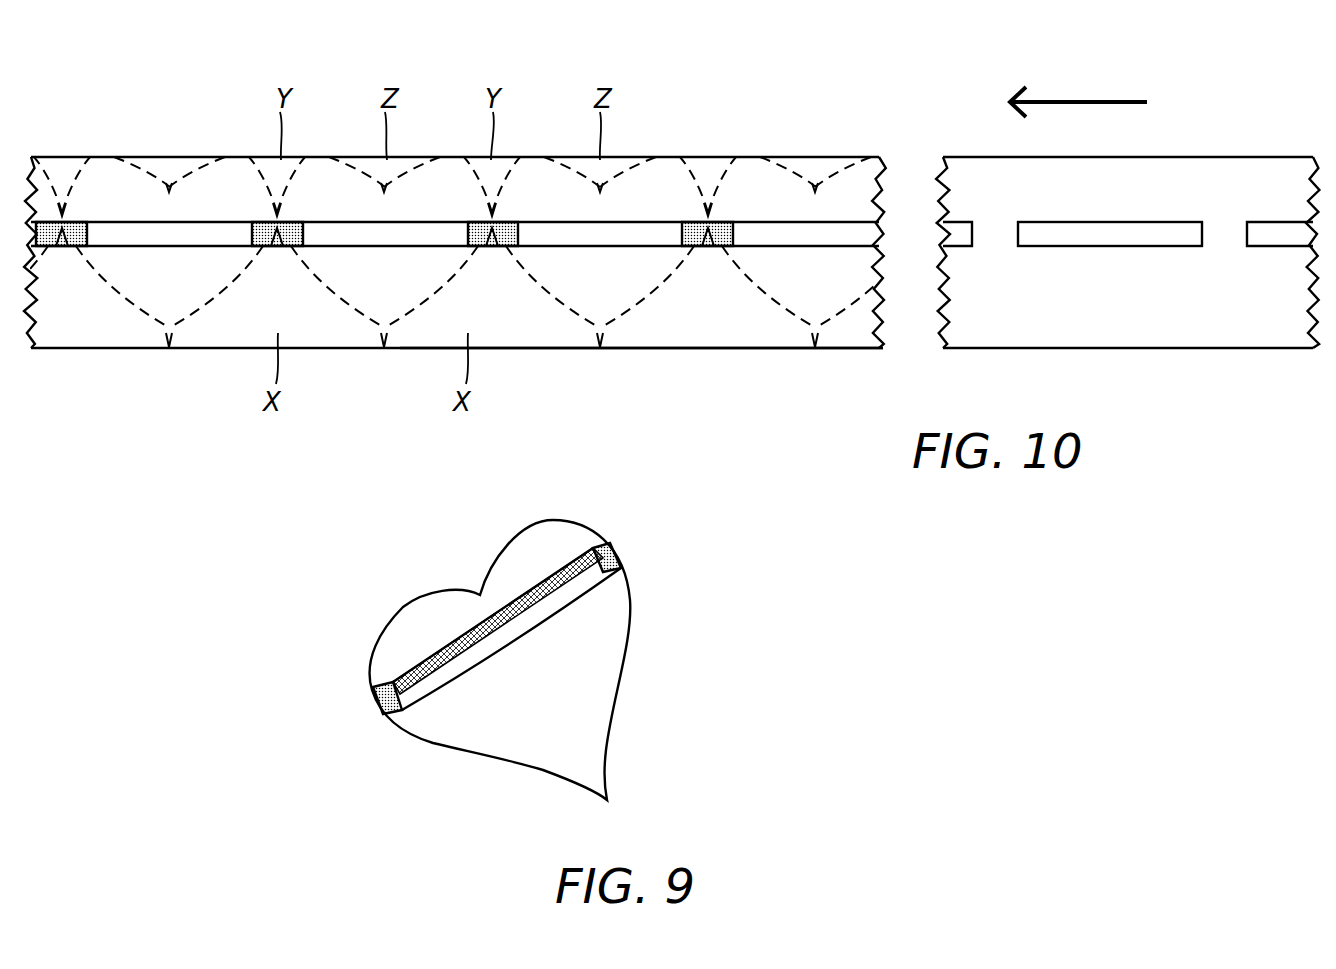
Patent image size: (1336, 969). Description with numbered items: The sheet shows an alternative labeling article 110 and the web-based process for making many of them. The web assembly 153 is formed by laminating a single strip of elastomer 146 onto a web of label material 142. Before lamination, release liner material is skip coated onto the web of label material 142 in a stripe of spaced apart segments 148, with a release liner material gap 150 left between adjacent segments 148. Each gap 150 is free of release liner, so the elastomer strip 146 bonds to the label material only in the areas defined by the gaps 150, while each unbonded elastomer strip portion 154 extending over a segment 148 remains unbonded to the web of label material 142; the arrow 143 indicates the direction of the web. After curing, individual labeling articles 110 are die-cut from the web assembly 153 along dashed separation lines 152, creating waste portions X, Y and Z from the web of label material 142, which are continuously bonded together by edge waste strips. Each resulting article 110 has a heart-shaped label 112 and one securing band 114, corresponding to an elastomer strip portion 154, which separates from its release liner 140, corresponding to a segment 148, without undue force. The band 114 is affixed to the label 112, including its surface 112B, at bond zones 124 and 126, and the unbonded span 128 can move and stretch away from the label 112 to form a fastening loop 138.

In FIG. 9, the labeling article 110 is at (658, 634).
In FIG. 9, the label 112 is at (506, 778).
In FIG. 9, the body layer surface 112B is at (593, 698).
In FIG. 9, the securing band 114 is at (451, 690).
In FIG. 9, the bond zone 124 is at (615, 552).
In FIG. 9, the bond zone 126 is at (385, 698).
In FIG. 9, the span 128 is at (517, 637).
In FIG. 9, the fastening loop 138 is at (424, 646).
In FIG. 9, the release liner 140 is at (542, 588).
In FIG. 10, the web of label material 142 is at (843, 335).
In FIG. 10, the machine direction arrow 143 is at (1087, 102).
In FIG. 10, the strip of elastomer 146 is at (765, 237).
In FIG. 10, the release liner segment 148 is at (961, 222).
In FIG. 10, the release liner material gap 150 is at (999, 233).
In FIG. 10, the dashed separation line 152 is at (490, 200).
In FIG. 10, the web assembly 153 is at (682, 360).
In FIG. 10, the unbonded elastomer strip portion 154 is at (468, 250).